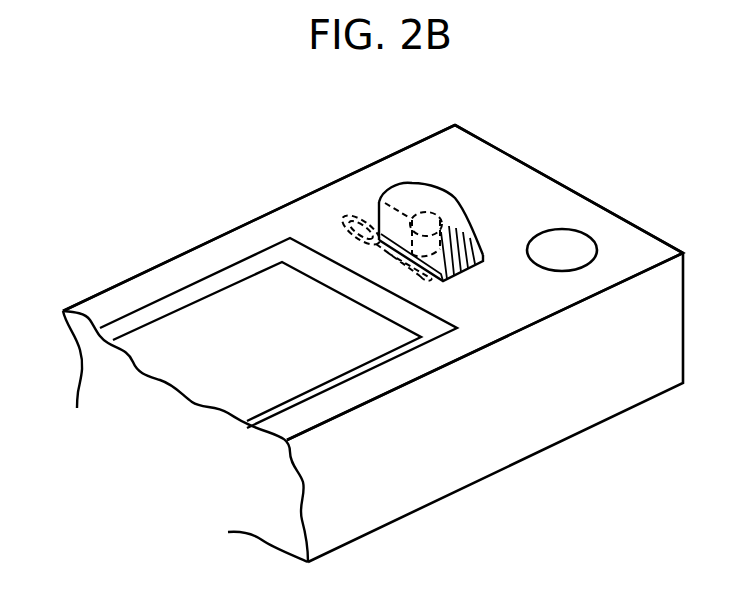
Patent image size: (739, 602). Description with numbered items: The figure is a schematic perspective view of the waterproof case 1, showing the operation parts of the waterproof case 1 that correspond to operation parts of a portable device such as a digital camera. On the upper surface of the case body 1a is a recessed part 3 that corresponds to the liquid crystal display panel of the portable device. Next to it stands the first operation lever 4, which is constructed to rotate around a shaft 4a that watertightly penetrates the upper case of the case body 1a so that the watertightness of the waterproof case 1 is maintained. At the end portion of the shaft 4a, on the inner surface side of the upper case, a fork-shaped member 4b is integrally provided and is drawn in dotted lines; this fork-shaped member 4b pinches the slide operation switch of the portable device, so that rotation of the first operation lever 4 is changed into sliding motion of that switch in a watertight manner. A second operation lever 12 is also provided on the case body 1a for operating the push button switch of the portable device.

The waterproof case 1 is at (538, 478).
The case body 1a is at (277, 225).
The recessed part 3 is at (213, 318).
The first operation lever 4 is at (460, 215).
The shaft 4a is at (426, 213).
The fork-shaped member 4b is at (371, 207).
The second operation lever 12 is at (577, 245).